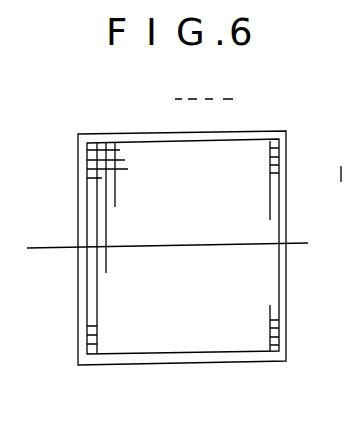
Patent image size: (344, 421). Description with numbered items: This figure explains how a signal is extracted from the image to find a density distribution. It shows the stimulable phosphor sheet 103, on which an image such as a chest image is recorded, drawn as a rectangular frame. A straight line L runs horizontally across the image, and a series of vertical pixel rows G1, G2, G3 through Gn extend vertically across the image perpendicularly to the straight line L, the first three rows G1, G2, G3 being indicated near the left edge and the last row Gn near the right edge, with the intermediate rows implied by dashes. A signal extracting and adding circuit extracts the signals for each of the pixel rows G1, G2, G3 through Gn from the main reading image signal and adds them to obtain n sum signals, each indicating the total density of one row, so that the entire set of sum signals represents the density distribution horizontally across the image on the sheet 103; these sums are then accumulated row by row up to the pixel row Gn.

The stimulable phosphor sheet 103 is at (72, 212).
The first vertical pixel row G1 is at (96, 142).
The second vertical pixel row G2 is at (105, 142).
The third vertical pixel row G3 is at (115, 143).
The n-th vertical pixel row Gn is at (274, 140).
The straight line L is at (58, 249).